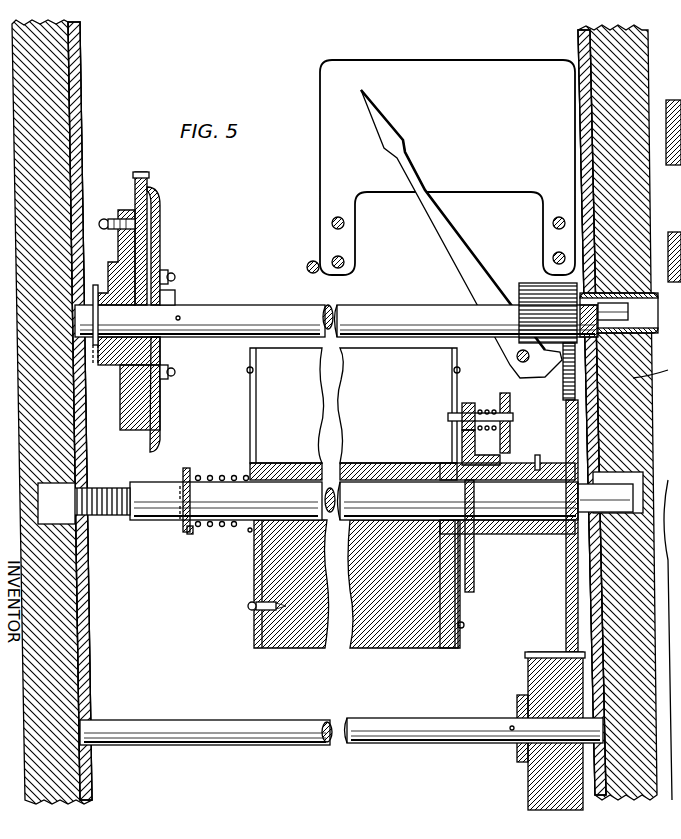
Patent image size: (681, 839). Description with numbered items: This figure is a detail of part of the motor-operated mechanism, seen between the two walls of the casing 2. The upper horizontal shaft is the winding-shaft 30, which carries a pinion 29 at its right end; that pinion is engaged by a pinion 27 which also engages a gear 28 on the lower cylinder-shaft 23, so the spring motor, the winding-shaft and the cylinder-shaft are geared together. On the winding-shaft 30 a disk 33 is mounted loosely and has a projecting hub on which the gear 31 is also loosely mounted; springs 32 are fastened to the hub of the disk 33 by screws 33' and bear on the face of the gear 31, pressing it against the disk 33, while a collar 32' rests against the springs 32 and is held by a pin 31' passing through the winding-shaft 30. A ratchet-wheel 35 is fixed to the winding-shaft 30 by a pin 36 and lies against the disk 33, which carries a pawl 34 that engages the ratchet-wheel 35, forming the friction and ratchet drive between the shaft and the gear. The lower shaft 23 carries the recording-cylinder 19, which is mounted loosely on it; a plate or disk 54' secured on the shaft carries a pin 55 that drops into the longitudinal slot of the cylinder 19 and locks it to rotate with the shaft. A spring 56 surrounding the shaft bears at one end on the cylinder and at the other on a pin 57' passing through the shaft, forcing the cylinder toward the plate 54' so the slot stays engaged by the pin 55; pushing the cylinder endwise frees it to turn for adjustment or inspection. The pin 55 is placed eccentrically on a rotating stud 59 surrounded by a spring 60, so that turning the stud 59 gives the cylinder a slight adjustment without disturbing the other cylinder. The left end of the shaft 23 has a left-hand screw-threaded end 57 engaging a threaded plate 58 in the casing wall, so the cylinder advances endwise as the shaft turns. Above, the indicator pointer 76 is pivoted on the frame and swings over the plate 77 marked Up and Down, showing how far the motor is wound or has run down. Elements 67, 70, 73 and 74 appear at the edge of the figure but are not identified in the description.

The casing 2 is at (656, 377).
The recording-cylinder 19 is at (296, 650).
The shaft 23 is at (164, 506).
The pinion 27 is at (530, 673).
The gear 28 is at (566, 608).
The pinion 29 is at (531, 284).
The winding-shaft 30 is at (288, 310).
The gear 31 is at (164, 230).
The pin 31' is at (226, 289).
The springs 32 is at (174, 319).
The collar 32' is at (195, 287).
The disk 33 is at (129, 260).
The screws 33' is at (188, 317).
The pawl 34 is at (112, 216).
The ratchet-wheel 35 is at (122, 388).
The pin 36 is at (97, 350).
The plate or disk 54' is at (489, 536).
The pin 55 is at (448, 418).
The spring 56 is at (192, 534).
The screw-threaded end 57 is at (101, 524).
The pin 57' is at (214, 483).
The plate 58 is at (86, 492).
The rotating stud 59 is at (480, 408).
The spring 60 is at (512, 410).
The bracket 67 is at (670, 187).
The support 70 is at (680, 55).
The block 73 is at (671, 249).
The block 74 is at (680, 96).
The pointer 76 is at (468, 252).
The plate 77 is at (461, 234).